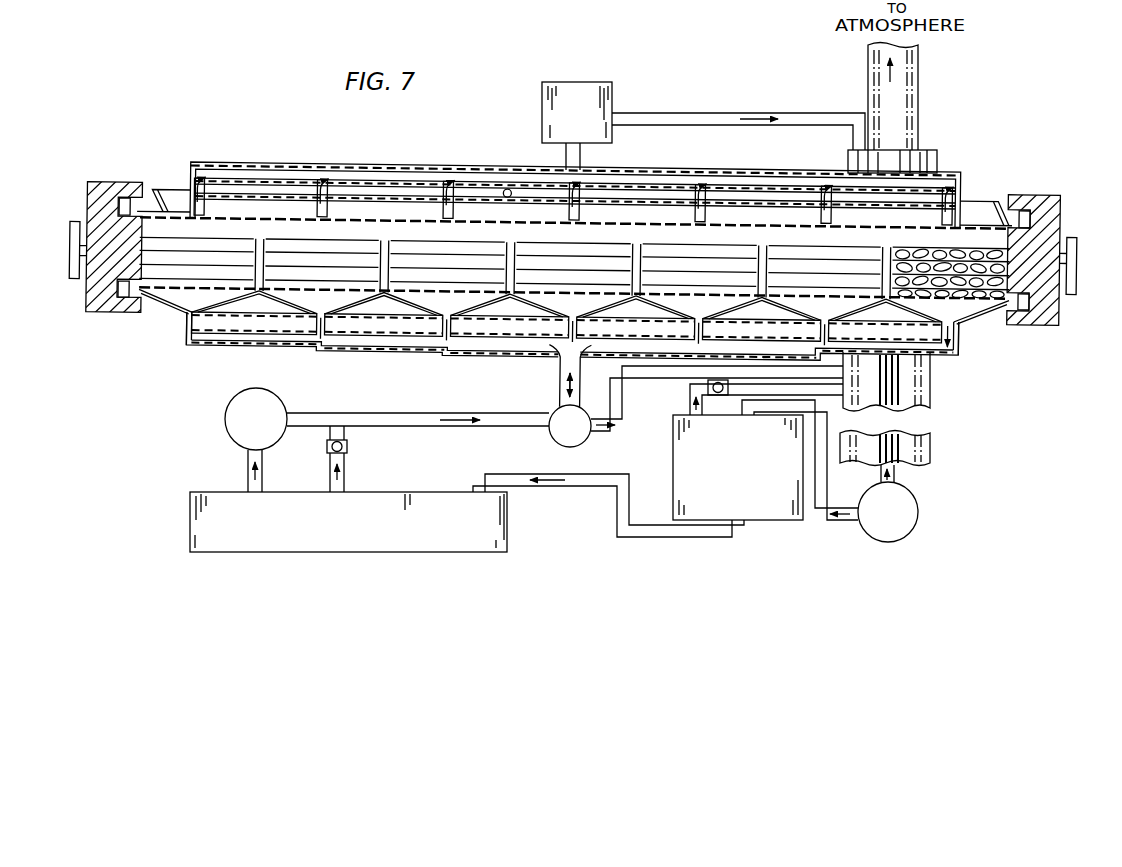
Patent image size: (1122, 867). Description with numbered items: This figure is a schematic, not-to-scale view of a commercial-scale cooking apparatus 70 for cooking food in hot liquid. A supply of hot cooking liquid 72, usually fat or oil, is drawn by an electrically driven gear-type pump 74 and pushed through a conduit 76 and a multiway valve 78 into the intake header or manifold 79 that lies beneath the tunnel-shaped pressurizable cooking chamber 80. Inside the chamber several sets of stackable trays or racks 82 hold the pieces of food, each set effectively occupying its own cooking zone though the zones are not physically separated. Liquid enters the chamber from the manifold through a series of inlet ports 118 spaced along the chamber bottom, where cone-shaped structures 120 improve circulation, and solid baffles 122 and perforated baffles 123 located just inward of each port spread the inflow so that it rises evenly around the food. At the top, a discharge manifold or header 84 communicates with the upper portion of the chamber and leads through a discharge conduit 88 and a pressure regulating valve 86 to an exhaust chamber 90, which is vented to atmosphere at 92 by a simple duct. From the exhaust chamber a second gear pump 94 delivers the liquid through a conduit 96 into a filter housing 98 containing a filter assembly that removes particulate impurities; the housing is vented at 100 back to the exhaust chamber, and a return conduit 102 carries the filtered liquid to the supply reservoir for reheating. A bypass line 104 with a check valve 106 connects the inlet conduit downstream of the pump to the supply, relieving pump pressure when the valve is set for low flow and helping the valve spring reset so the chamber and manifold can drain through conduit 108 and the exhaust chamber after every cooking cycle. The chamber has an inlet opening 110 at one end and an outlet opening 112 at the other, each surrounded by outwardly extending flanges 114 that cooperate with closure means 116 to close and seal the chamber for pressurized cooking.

The cooking apparatus 70 is at (188, 368).
The supply of hot cooking liquid 72 is at (348, 522).
The gear-type pump 74 is at (256, 419).
The conduit 76 is at (307, 427).
The multiway valve 78 is at (570, 426).
The intake header or manifold 79 is at (550, 372).
The pressurizable cooking chamber 80 is at (173, 190).
The stackable trays or racks 82 is at (436, 280).
The discharge manifold or header 84 is at (531, 175).
The pressure regulating valve 86 is at (577, 112).
The discharge conduit 88 is at (584, 158).
The exhaust chamber 90 is at (921, 140).
The vent to atmosphere 92 is at (765, 97).
The second gear pump 94 is at (885, 447).
The return conduit 96 is at (818, 452).
The filter housing 98 is at (773, 518).
The vent 100 is at (691, 411).
The return conduit 102 is at (592, 482).
The bypass line 104 is at (246, 478).
The check valve 106 is at (348, 449).
The conduit 108 is at (624, 423).
The inlet opening 110 is at (1060, 218).
The outlet opening 112 is at (132, 214).
The outwardly extending flanges 114 is at (138, 286).
The closure means 116 is at (97, 308).
The inlet ports 118 is at (818, 337).
The cone-shaped structures 120 is at (574, 307).
The solid baffles 122 is at (572, 338).
The perforated baffles 123 is at (590, 280).